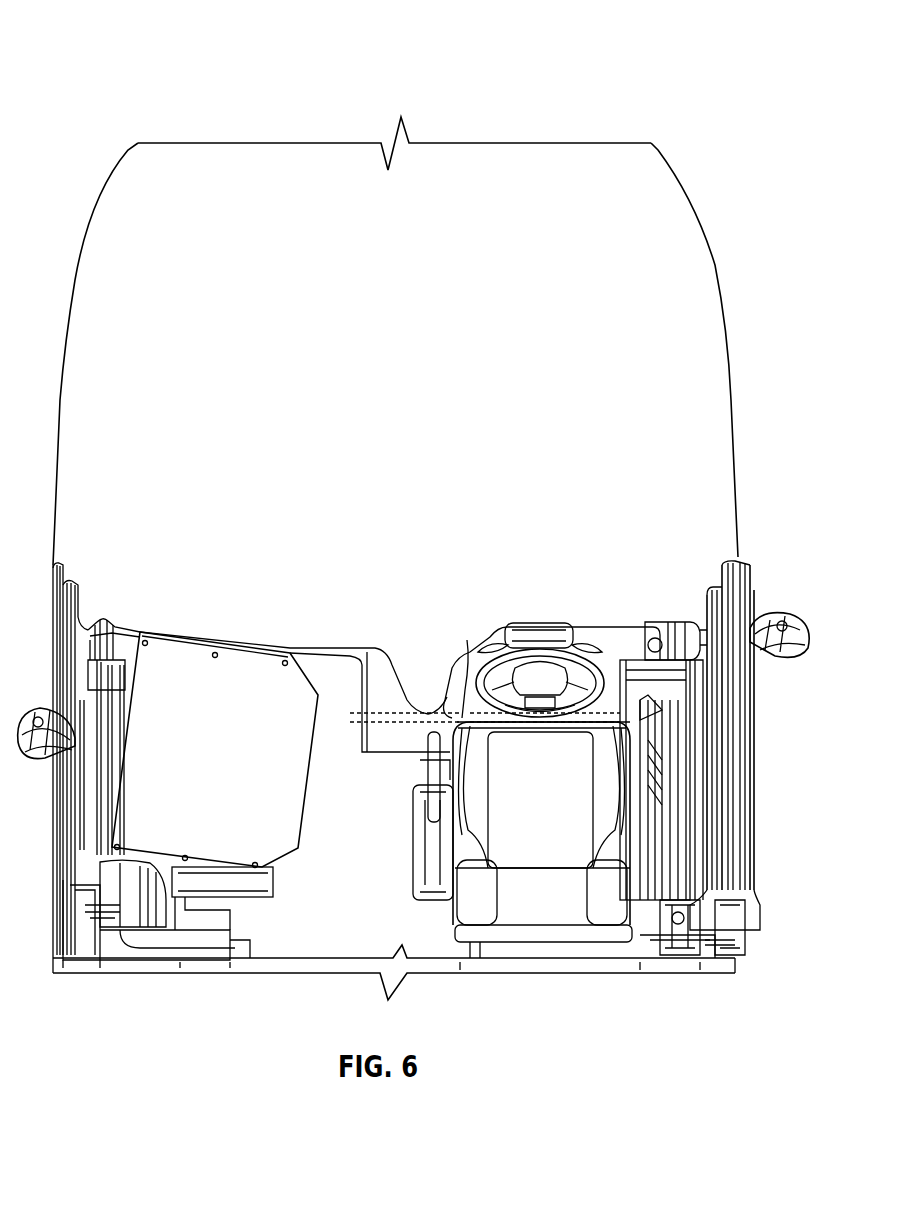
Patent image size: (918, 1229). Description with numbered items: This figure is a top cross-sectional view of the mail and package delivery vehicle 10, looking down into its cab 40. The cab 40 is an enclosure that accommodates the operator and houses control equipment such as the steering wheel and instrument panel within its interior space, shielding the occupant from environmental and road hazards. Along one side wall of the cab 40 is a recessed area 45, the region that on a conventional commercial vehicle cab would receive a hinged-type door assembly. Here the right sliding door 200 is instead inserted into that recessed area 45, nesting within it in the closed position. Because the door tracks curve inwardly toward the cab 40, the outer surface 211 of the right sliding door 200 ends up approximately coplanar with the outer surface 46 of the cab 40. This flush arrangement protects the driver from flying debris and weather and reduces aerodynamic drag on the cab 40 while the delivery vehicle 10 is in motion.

The delivery vehicle 10 is at (96, 57).
The cab 40 is at (660, 196).
The outer surface of the cab 46 is at (740, 471).
The recessed area 45 is at (713, 720).
The right sliding door 200 is at (763, 806).
The outer surface of the right sliding door 211 is at (760, 689).